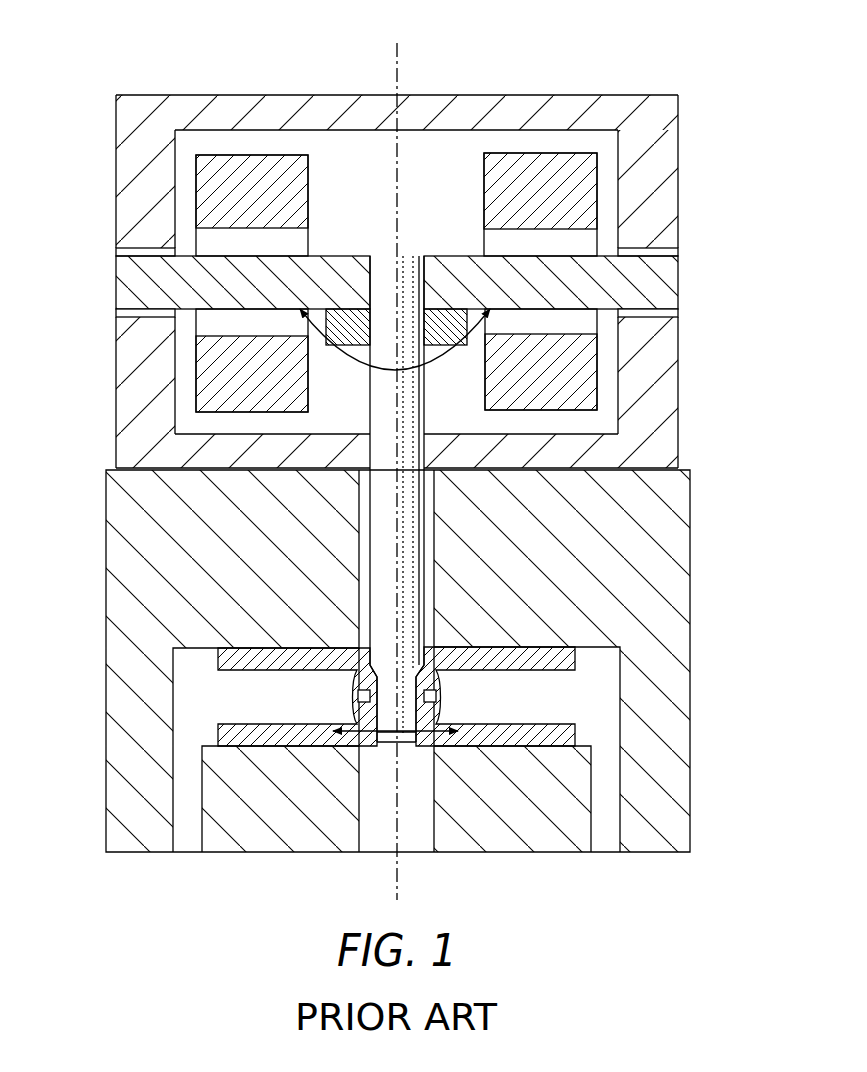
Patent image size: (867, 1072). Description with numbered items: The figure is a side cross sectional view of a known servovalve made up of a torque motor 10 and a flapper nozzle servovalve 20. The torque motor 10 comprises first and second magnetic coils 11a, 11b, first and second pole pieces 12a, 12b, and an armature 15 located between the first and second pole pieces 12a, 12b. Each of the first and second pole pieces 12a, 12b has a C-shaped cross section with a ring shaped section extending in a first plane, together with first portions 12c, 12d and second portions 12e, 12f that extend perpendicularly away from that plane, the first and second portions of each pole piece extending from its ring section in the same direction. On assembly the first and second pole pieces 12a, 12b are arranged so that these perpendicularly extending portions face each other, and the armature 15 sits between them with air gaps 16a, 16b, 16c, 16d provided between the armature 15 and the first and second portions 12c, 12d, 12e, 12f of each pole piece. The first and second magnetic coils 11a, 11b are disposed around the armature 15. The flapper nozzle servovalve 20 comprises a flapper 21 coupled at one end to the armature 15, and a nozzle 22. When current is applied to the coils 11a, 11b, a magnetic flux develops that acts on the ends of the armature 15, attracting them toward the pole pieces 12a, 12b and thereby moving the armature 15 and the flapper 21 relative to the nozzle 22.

The torque motor 10 is at (427, 260).
The first magnetic coil 11a is at (538, 162).
The second magnetic coil 11b is at (252, 163).
The first pole piece 12a is at (125, 117).
The second pole piece 12b is at (125, 447).
The first portion 12c is at (125, 192).
The first portion 12d is at (125, 375).
The second portion 12e is at (665, 190).
The second portion 12f is at (665, 375).
The armature 15 is at (125, 287).
The air gap 16a is at (120, 252).
The air gap 16b is at (120, 314).
The air gap 16c is at (680, 251).
The air gap 16d is at (680, 314).
The flapper nozzle servovalve 20 is at (384, 554).
The flapper 21 is at (410, 588).
The nozzle 22 is at (557, 697).